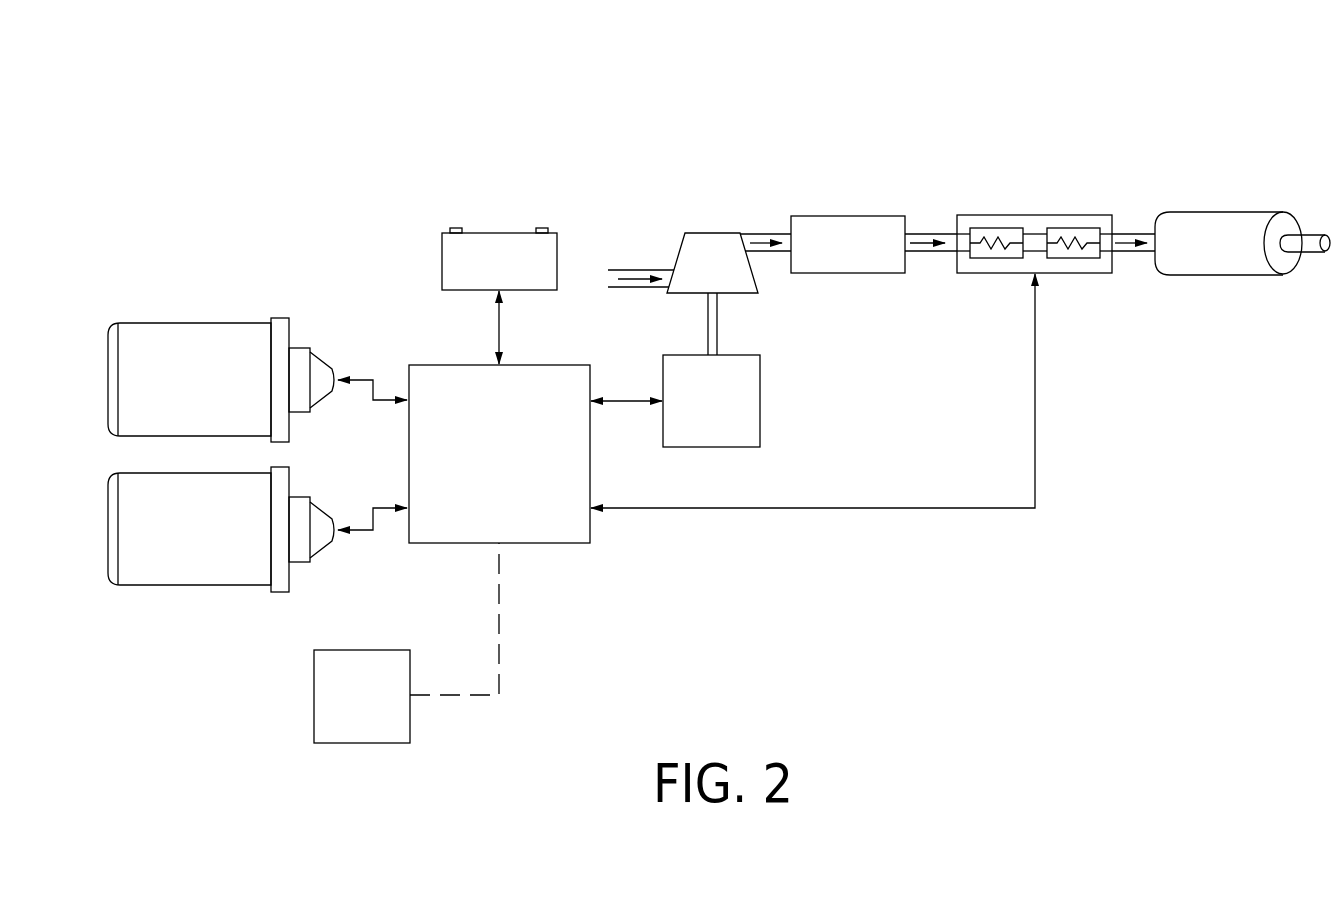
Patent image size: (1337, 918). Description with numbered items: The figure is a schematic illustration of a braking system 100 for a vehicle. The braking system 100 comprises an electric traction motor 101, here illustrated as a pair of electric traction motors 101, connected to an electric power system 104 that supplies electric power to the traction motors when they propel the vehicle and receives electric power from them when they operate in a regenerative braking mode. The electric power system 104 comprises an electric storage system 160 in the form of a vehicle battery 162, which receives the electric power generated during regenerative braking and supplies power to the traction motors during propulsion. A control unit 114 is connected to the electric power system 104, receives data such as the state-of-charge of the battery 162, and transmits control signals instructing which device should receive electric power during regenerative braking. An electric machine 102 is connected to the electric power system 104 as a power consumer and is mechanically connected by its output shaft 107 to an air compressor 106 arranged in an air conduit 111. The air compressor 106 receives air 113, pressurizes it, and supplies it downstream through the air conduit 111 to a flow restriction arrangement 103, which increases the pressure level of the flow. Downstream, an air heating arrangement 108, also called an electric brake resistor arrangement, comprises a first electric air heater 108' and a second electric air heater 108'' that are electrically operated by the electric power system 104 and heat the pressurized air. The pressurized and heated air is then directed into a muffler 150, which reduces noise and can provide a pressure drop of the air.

The braking system 100 is at (768, 105).
The electric traction motor 101 is at (191, 323).
The electric machine 102 is at (760, 400).
The flow restriction arrangement 103 is at (845, 216).
The electric power system 104 is at (550, 543).
The air compressor 106 is at (707, 233).
The output shaft 107 is at (718, 323).
The air heating arrangement 108 is at (868, 321).
The first electric air heater 108' is at (976, 287).
The second electric air heater 108'' is at (1096, 286).
The air conduit 111 is at (650, 277).
The air 113 is at (632, 285).
The control unit 114 is at (314, 697).
The muffler 150 is at (1223, 212).
The electric storage system 160 is at (480, 233).
The battery 162 is at (522, 263).